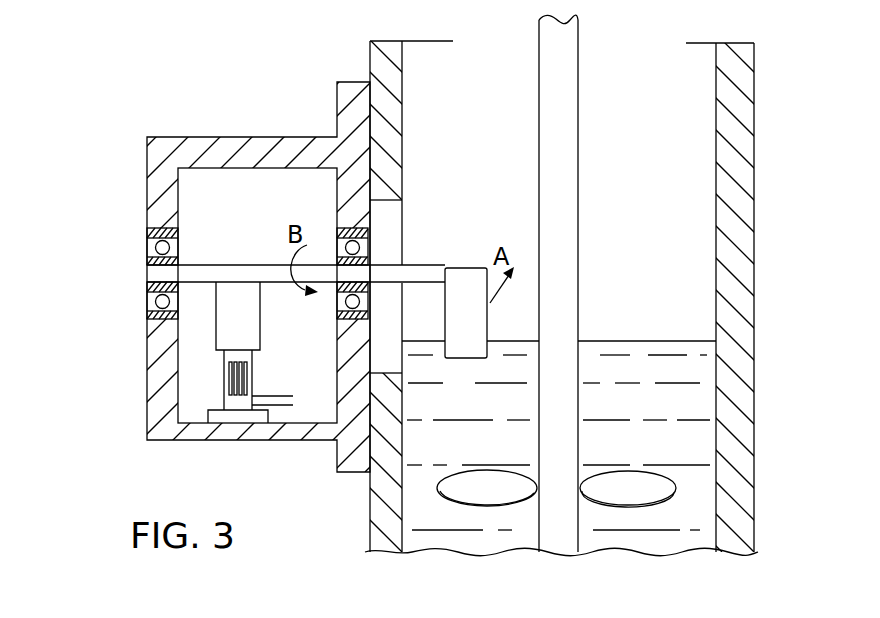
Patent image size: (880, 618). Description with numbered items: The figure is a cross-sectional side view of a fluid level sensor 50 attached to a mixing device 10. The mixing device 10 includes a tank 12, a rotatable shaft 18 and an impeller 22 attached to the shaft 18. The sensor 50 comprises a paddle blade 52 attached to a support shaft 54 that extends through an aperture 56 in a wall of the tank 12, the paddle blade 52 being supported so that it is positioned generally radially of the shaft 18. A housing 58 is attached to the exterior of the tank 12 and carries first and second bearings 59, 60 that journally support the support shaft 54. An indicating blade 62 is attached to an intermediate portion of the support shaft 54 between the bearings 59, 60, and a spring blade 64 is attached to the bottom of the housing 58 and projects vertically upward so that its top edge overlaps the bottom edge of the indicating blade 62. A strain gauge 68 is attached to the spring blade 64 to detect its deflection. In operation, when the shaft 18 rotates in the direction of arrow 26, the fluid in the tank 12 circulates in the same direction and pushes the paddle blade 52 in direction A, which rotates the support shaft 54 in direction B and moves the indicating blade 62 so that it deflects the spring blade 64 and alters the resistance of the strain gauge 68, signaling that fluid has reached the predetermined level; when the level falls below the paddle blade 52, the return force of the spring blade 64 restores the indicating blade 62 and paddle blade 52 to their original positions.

The mixing device 10 is at (637, 548).
The tank 12 is at (732, 192).
The rotatable shaft 18 is at (558, 413).
The impeller 22 is at (652, 487).
The arrow 26 is at (515, 292).
The level sensor 50 is at (128, 274).
The paddle blade 52 is at (465, 358).
The support shaft 54 is at (152, 312).
The aperture 56 is at (392, 237).
The housing 58 is at (162, 182).
The first bearing 59 is at (160, 240).
The second bearing 60 is at (352, 235).
The indicating blade 62 is at (226, 333).
The spring blade 64 is at (226, 383).
The strain gauge 68 is at (237, 396).